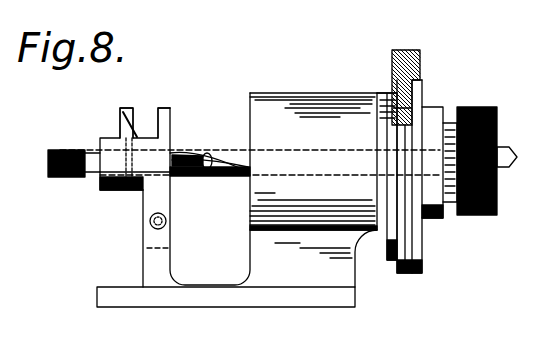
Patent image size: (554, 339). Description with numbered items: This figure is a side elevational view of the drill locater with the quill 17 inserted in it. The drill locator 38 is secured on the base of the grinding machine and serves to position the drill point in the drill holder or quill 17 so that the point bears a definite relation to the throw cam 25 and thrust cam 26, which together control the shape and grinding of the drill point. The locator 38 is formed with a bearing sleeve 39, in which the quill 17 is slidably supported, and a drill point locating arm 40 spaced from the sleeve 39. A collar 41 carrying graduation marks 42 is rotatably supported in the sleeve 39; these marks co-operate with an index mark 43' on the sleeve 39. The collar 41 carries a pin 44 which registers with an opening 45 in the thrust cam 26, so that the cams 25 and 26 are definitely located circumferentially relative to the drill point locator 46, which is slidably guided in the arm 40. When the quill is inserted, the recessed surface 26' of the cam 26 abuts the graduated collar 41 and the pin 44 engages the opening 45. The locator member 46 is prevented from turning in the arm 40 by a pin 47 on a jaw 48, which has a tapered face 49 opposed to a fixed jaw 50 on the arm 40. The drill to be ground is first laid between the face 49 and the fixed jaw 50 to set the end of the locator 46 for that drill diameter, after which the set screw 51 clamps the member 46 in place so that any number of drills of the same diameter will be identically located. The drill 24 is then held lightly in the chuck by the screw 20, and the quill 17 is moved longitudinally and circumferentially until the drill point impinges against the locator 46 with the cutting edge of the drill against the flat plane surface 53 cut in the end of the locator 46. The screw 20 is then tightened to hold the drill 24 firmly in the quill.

The quill 17 is at (472, 82).
The screw 20 is at (482, 215).
The drill 24 is at (240, 150).
The throw cam 25 is at (400, 50).
The thrust cam 26 is at (397, 197).
The recessed surface 26' is at (377, 58).
The drill locator 38 is at (287, 288).
The bearing sleeve 39 is at (290, 82).
The drill point locating arm 40 is at (152, 257).
The collar 41 is at (377, 190).
The graduation marks 42 is at (395, 90).
The index mark 43' is at (352, 159).
The pin 44 is at (427, 68).
The opening 45 is at (397, 110).
The drill point locator 46 is at (185, 173).
The pin 47 is at (123, 163).
The jaw 48 is at (120, 117).
The tapered face 49 is at (133, 113).
The fixed jaw 50 is at (178, 150).
The set screw 51 is at (149, 221).
The plane surface 53 is at (192, 150).